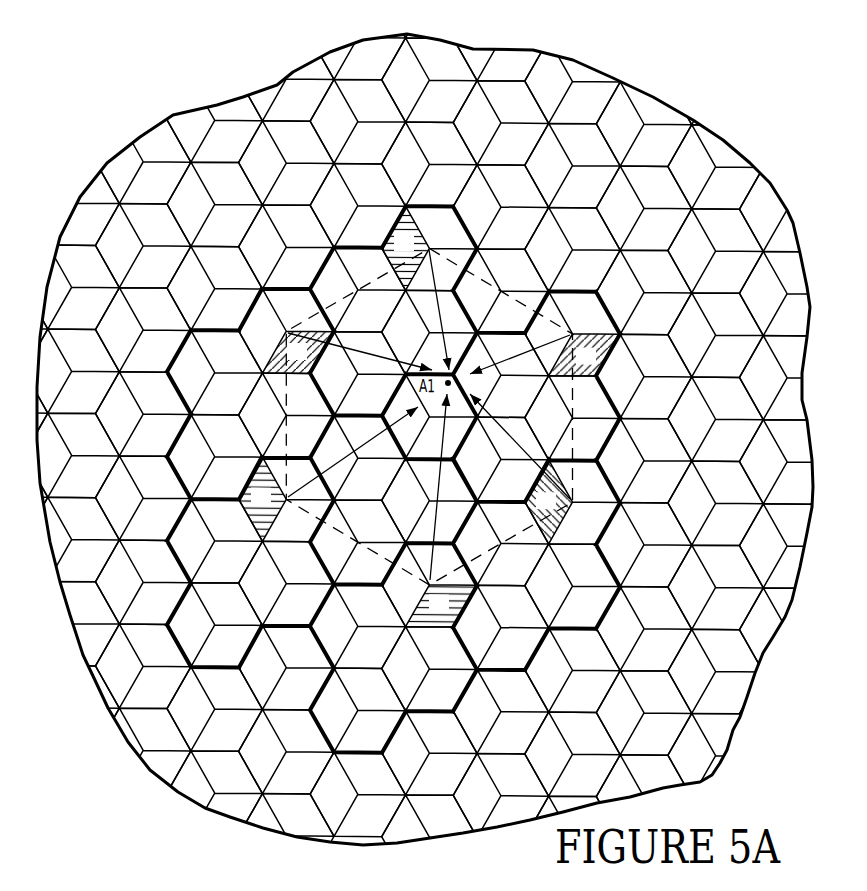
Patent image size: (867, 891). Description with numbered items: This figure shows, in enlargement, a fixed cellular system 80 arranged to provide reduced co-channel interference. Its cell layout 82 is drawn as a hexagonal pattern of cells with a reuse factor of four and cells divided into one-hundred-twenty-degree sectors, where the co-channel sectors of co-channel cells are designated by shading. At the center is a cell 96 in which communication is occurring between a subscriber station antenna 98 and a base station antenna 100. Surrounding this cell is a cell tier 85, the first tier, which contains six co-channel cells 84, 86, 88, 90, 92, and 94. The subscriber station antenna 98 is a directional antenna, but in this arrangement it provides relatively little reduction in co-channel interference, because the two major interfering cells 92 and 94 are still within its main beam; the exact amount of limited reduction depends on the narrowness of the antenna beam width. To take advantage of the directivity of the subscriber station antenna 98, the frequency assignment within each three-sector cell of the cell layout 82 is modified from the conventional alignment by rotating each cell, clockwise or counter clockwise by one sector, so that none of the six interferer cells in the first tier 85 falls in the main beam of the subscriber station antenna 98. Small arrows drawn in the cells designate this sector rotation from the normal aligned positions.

The fixed cellular system 80 is at (793, 49).
The cell layout 82 is at (727, 143).
The co-channel cell 84 is at (312, 332).
The cell tier 85 is at (468, 290).
The co-channel cell 86 is at (420, 229).
The co-channel cell 88 is at (599, 334).
The co-channel cell 90 is at (555, 483).
The co-channel cell 92 is at (453, 586).
The co-channel cell 94 is at (265, 477).
The cell 96 is at (431, 458).
The subscriber station antenna 98 is at (452, 384).
The base station antenna 100 is at (423, 412).